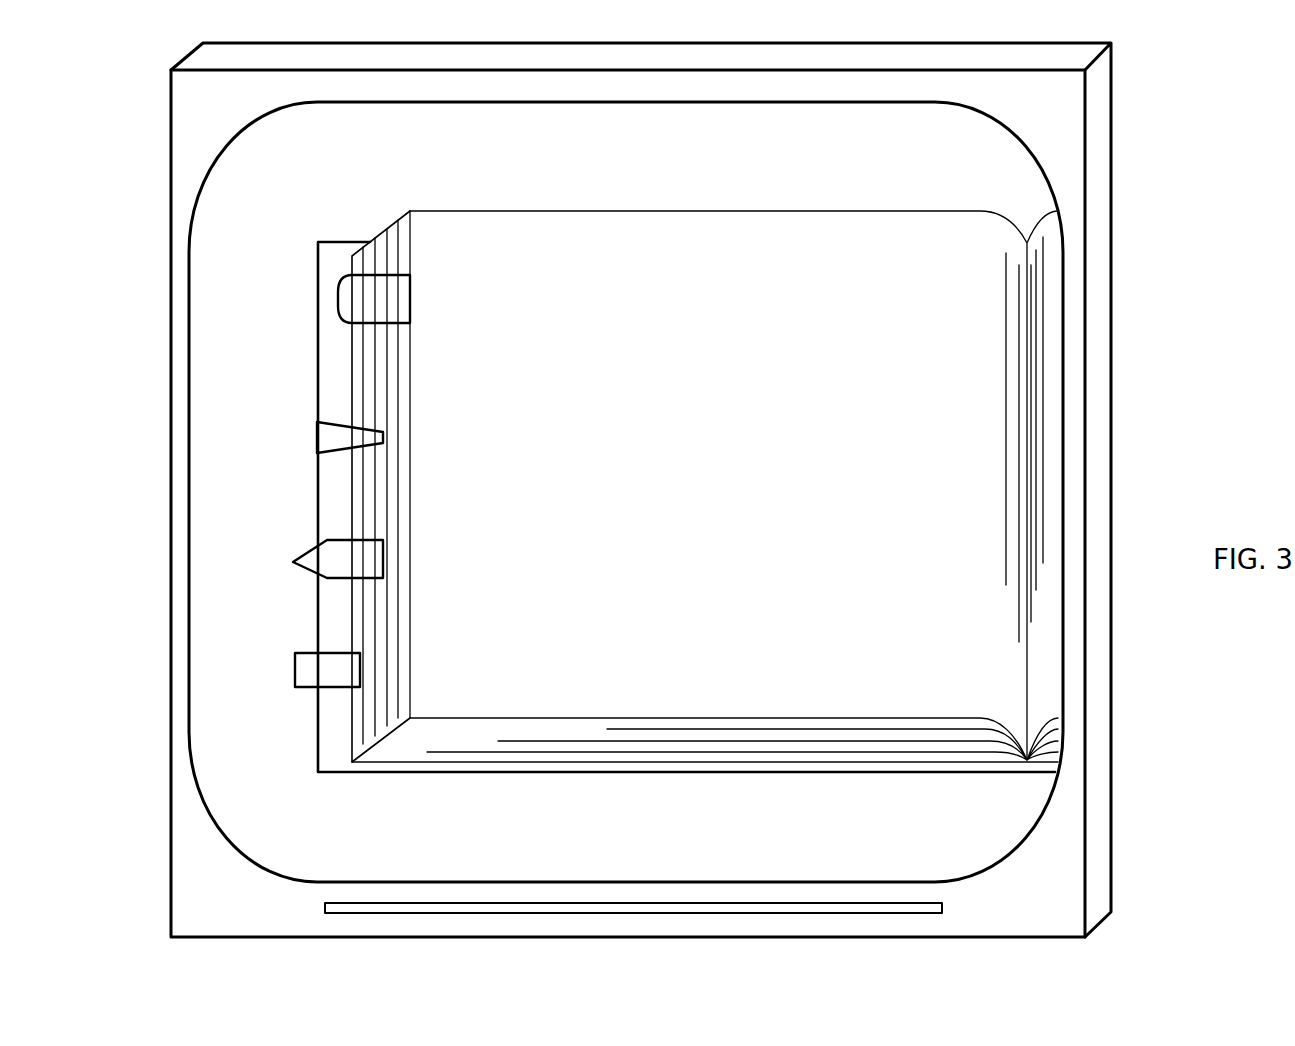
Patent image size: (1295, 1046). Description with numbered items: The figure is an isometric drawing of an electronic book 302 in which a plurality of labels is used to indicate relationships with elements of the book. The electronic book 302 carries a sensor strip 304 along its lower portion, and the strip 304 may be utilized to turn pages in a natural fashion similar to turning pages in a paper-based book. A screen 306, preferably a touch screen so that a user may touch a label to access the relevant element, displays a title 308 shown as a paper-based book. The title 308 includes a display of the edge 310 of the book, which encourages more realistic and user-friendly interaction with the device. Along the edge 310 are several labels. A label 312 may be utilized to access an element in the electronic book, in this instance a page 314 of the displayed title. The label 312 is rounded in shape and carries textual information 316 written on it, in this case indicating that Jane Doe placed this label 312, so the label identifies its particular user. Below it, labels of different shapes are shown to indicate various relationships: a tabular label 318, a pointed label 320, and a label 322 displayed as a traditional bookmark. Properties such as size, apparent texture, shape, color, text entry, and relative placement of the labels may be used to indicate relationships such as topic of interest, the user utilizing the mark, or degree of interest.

The electronic book 302 is at (1111, 147).
The sensor strip 304 is at (409, 903).
The screen 306 is at (828, 103).
The title 308 is at (845, 762).
The edge of the book 310 is at (372, 232).
The label 312 is at (338, 290).
The page 314 is at (510, 235).
The textual information 316 is at (347, 302).
The tabular label 318 is at (317, 444).
The pointed label 320 is at (305, 553).
The traditional bookmark label 322 is at (305, 653).